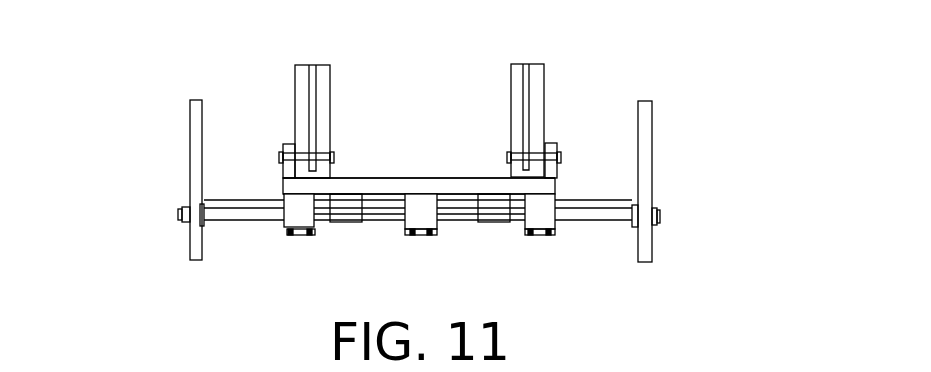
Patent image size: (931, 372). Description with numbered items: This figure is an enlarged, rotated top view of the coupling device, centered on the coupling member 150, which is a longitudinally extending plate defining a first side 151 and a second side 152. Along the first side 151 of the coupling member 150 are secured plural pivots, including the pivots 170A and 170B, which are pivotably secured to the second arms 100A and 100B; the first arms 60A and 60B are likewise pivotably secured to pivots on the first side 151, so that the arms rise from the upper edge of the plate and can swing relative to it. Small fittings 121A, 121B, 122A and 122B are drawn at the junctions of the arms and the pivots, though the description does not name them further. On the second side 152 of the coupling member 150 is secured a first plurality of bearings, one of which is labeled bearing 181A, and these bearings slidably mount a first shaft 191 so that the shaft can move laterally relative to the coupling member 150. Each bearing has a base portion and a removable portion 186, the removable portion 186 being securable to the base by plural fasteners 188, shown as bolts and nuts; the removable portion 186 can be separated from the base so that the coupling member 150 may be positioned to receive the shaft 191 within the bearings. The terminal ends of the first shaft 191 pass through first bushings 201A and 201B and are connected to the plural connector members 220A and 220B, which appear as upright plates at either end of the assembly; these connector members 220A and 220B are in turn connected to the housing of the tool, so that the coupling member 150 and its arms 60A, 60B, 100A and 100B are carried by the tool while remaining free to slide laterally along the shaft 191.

The first arm 60A is at (546, 65).
The first arm 60B is at (298, 65).
The second arm 100A is at (523, 65).
The second arm 100B is at (325, 67).
The pin 121A is at (508, 151).
The pin 121B is at (333, 151).
The cross bar 122A is at (540, 152).
The cross bar 122B is at (302, 152).
The pivot 170A is at (558, 165).
The pivot 170B is at (283, 166).
The coupling member 150 is at (553, 187).
The first side 151 is at (393, 178).
The second side 152 is at (457, 194).
The bearing 181A is at (313, 221).
The removable portion 186 is at (284, 222).
The fastener 188 is at (290, 236).
The first shaft 191 is at (622, 222).
The first bushing 201A is at (658, 212).
The first bushing 201B is at (183, 213).
The connector member 220A is at (645, 140).
The connector member 220B is at (197, 138).